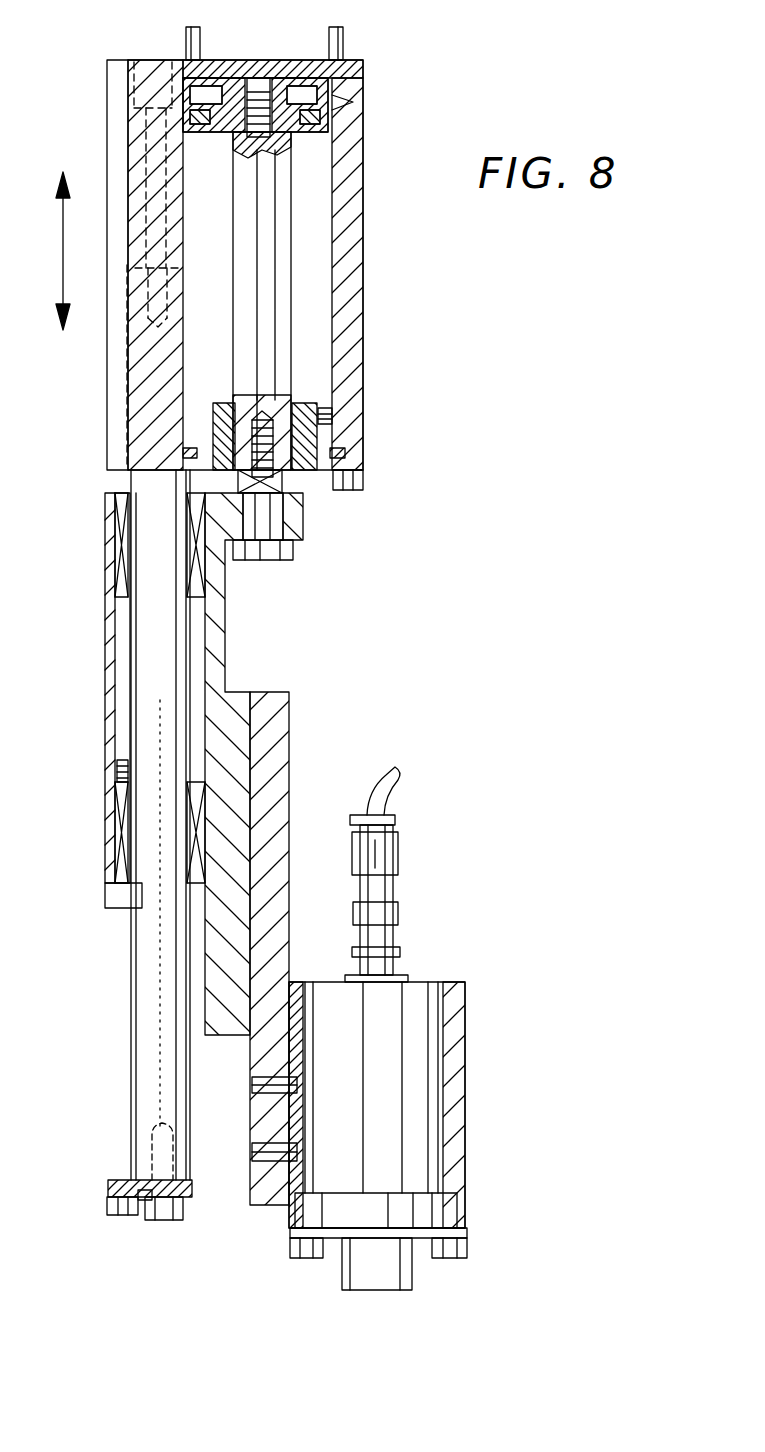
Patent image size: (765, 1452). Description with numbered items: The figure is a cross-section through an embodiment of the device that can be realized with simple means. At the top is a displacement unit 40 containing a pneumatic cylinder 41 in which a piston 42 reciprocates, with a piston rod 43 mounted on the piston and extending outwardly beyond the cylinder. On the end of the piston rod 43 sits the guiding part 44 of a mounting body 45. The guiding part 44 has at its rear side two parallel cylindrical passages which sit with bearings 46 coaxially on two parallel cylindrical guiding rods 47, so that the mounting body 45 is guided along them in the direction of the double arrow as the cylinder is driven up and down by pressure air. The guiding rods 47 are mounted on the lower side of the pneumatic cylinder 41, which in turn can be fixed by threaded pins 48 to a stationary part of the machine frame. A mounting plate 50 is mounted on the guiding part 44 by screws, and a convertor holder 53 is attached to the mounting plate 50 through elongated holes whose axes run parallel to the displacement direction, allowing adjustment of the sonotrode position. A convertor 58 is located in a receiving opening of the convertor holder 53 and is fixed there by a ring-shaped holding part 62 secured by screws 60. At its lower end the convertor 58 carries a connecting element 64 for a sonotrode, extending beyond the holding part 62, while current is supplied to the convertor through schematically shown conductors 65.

The displacement unit 40 is at (367, 262).
The pneumatic cylinder 41 is at (352, 300).
The piston 42 is at (304, 137).
The piston rod 43 is at (293, 357).
The guiding part 44 is at (215, 648).
The mounting body 45 is at (265, 590).
The bearings 46 is at (122, 580).
The guiding rods 47 is at (150, 1018).
The threaded pins 48 is at (200, 45).
The mounting plate 50 is at (308, 735).
The convertor holder 53 is at (453, 993).
The convertor 58 is at (413, 1128).
The screws 60 is at (298, 1260).
The ring-shaped holding part 62 is at (430, 1213).
The connecting element 64 is at (390, 1292).
The conductors 65 is at (397, 795).